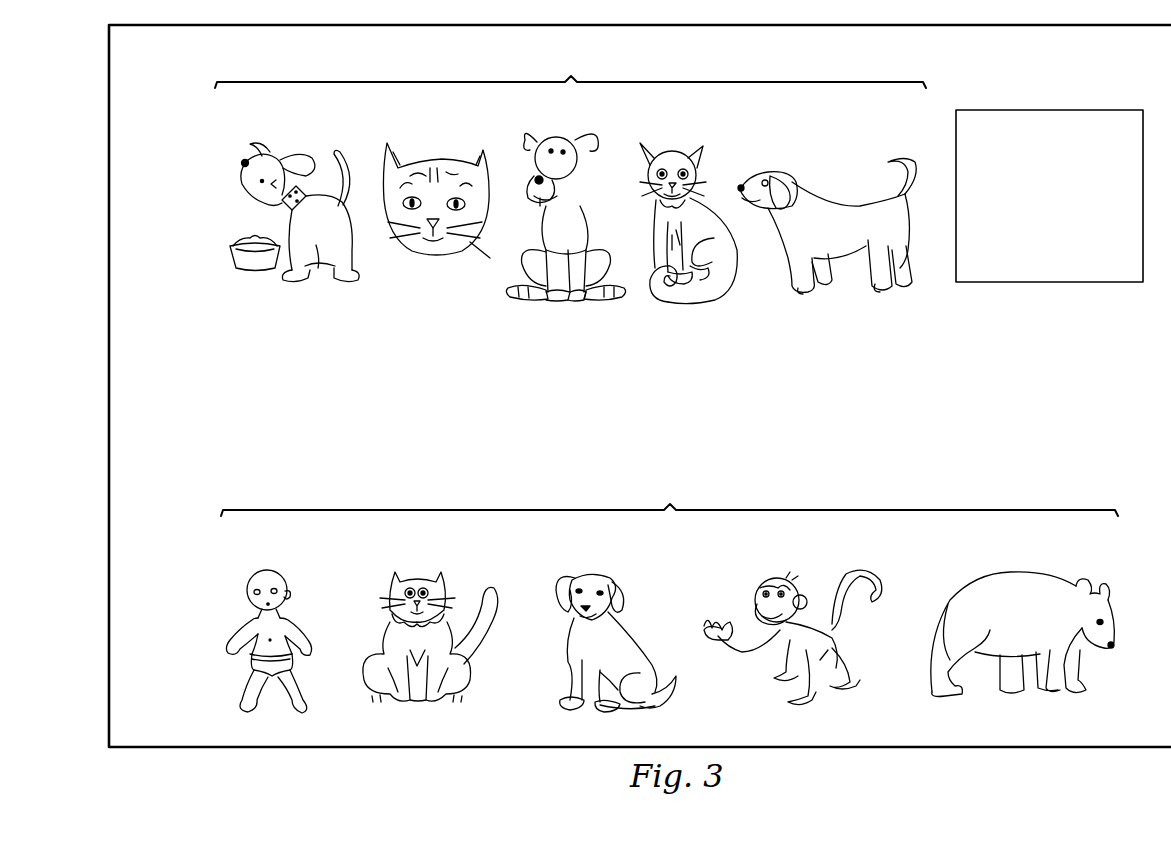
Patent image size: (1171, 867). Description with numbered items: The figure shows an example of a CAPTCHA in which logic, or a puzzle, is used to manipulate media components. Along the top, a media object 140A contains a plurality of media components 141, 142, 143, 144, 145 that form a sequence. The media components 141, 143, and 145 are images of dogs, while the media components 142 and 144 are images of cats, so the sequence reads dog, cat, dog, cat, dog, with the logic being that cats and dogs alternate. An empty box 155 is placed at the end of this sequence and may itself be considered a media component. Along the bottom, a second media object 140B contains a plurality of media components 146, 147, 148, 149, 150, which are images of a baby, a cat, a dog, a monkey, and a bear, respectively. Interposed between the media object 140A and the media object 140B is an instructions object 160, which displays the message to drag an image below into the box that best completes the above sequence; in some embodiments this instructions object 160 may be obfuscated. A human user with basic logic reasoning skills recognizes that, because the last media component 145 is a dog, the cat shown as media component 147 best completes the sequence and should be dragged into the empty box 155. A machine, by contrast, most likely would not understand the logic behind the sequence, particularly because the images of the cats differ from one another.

The media object 140A is at (570, 71).
The media object 140B is at (669, 498).
The media component 141 is at (272, 150).
The media component 142 is at (432, 174).
The media component 143 is at (590, 128).
The media component 144 is at (676, 150).
The media component 145 is at (776, 172).
The media component 146 is at (265, 570).
The media component 147 is at (414, 574).
The media component 148 is at (592, 572).
The media component 149 is at (776, 578).
The media component 150 is at (1040, 574).
The empty box 155 is at (1050, 110).
The instructions object 160 is at (411, 383).